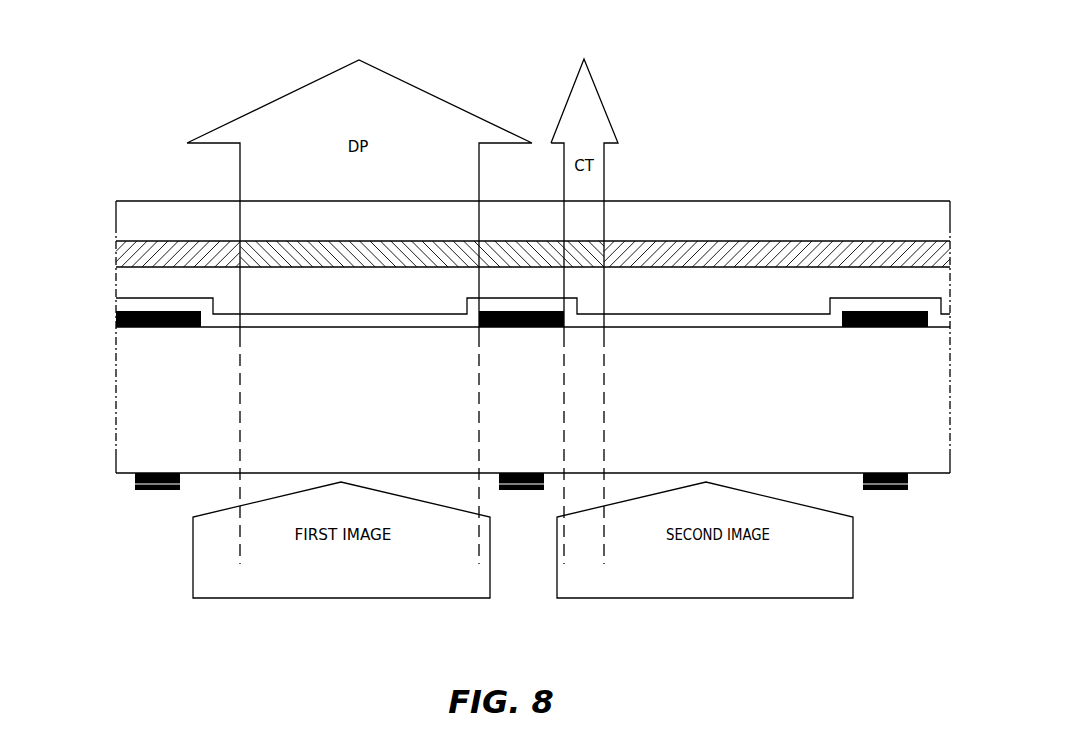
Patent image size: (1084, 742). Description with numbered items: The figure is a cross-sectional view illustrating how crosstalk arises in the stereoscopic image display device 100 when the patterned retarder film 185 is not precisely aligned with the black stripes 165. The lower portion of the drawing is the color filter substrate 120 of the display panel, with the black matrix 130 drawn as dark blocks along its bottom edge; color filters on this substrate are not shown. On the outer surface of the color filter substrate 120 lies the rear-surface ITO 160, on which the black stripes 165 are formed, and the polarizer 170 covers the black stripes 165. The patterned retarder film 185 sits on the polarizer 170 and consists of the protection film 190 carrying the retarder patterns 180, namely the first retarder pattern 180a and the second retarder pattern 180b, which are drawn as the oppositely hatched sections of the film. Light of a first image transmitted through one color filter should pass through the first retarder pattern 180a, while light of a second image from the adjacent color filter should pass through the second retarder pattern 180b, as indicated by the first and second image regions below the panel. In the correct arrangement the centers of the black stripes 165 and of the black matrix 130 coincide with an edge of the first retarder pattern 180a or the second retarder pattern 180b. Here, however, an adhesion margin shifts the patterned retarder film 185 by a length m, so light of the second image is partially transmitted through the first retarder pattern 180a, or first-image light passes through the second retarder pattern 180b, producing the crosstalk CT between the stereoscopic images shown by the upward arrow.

The stereoscopic image display device 100 is at (185, 101).
The color filter substrate 120 is at (141, 396).
The black matrix 130 is at (136, 478).
The rear-surface ITO 160 is at (141, 303).
The black stripes 165 is at (116, 326).
The polarizer 170 is at (141, 277).
The light blocking layer 180 is at (533, 159).
The first retarder pattern 180a is at (588, 252).
The second retarder pattern 180b is at (670, 252).
The patterned retarder film 185 is at (555, 49).
The protection film 190 is at (516, 214).